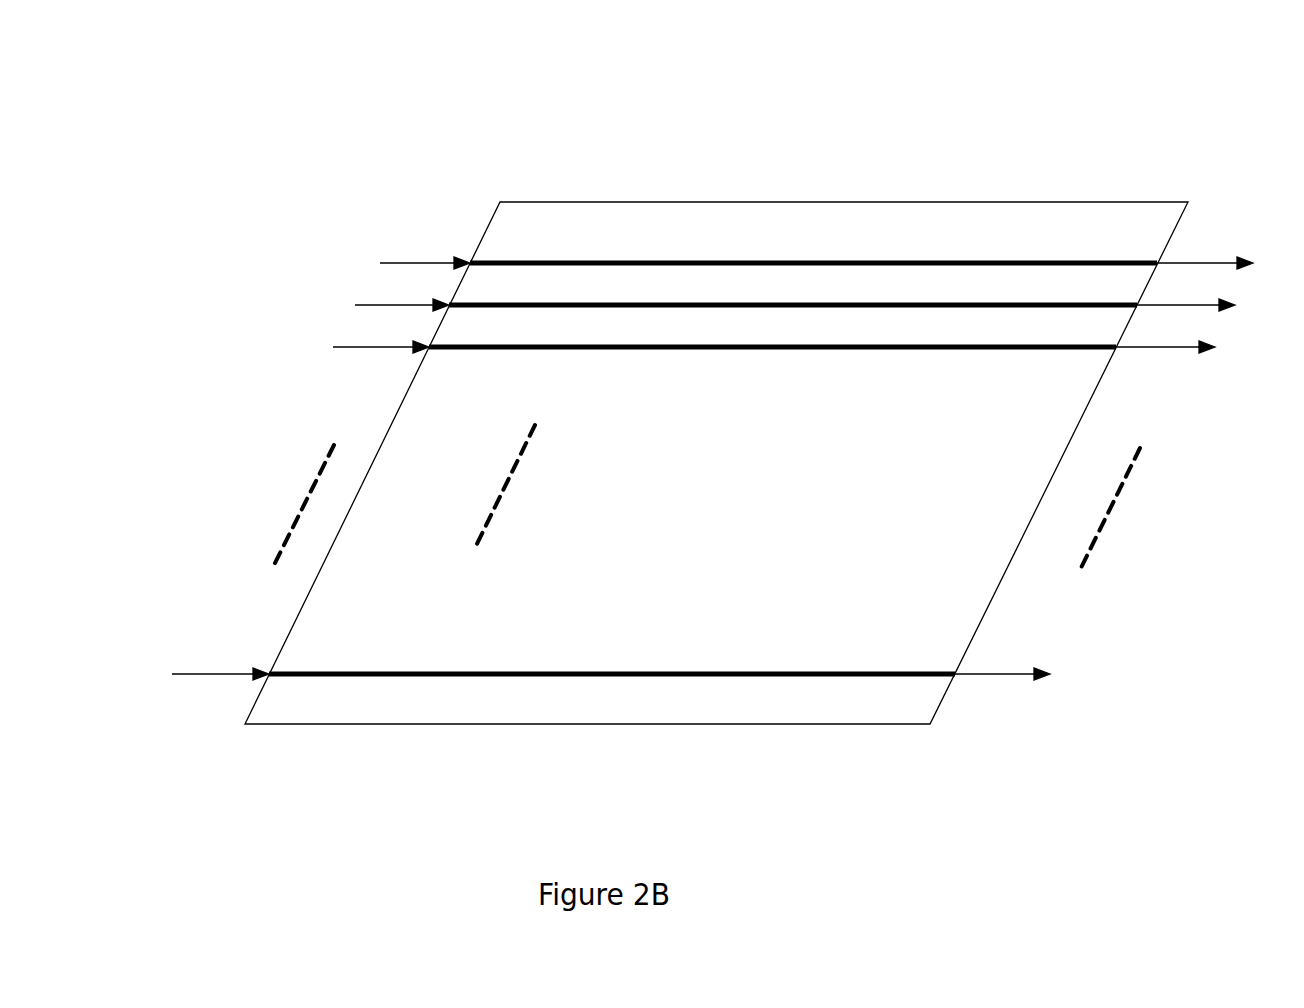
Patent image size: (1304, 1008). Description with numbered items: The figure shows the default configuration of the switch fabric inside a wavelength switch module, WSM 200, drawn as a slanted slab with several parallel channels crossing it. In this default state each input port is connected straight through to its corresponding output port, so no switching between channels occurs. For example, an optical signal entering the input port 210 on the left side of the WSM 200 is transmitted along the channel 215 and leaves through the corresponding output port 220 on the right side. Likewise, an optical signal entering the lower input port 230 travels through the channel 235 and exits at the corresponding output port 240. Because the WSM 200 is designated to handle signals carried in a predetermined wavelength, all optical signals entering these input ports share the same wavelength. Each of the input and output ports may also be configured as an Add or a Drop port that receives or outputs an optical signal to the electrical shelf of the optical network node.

The wavelength switch module 200 is at (940, 190).
The input port 210 is at (471, 242).
The channel 215 is at (725, 250).
The output port 220 is at (1207, 236).
The input port 230 is at (220, 700).
The channel 235 is at (540, 677).
The output port 240 is at (978, 692).